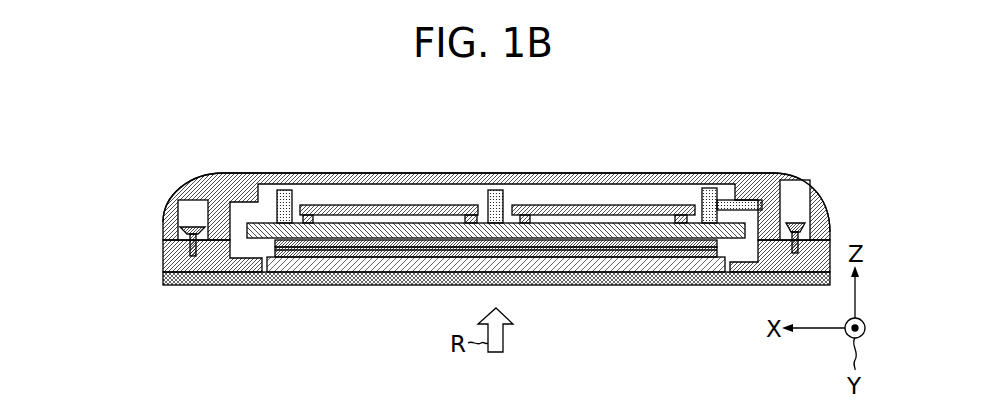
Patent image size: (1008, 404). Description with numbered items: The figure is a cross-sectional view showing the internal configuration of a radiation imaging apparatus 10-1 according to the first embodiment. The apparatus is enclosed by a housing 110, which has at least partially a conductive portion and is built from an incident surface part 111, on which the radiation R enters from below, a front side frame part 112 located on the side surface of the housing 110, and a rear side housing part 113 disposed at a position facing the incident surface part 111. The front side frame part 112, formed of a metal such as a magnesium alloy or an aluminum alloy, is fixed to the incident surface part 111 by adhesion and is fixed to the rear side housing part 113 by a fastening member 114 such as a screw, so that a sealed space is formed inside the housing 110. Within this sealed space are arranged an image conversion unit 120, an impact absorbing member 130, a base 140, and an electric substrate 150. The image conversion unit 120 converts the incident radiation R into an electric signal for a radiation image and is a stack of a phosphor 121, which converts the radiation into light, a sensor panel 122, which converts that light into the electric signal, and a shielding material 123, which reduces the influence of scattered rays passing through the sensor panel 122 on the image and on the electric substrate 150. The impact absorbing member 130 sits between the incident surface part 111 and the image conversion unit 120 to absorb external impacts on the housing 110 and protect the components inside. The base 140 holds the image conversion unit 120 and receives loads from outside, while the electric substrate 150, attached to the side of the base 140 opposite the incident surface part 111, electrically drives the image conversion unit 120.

The radiation imaging apparatus 10-1 is at (299, 147).
The housing 110 is at (110, 146).
The incident surface part 111 is at (240, 277).
The front side frame part 112 is at (177, 253).
The rear side housing part 113 is at (217, 183).
The fastening member 114 is at (193, 230).
The image conversion unit 120 is at (785, 112).
The phosphor 121 is at (683, 260).
The sensor panel 122 is at (637, 250).
The shielding material 123 is at (597, 242).
The impact absorbing member 130 is at (768, 205).
The base 140 is at (492, 188).
The electric substrate 150 is at (400, 206).